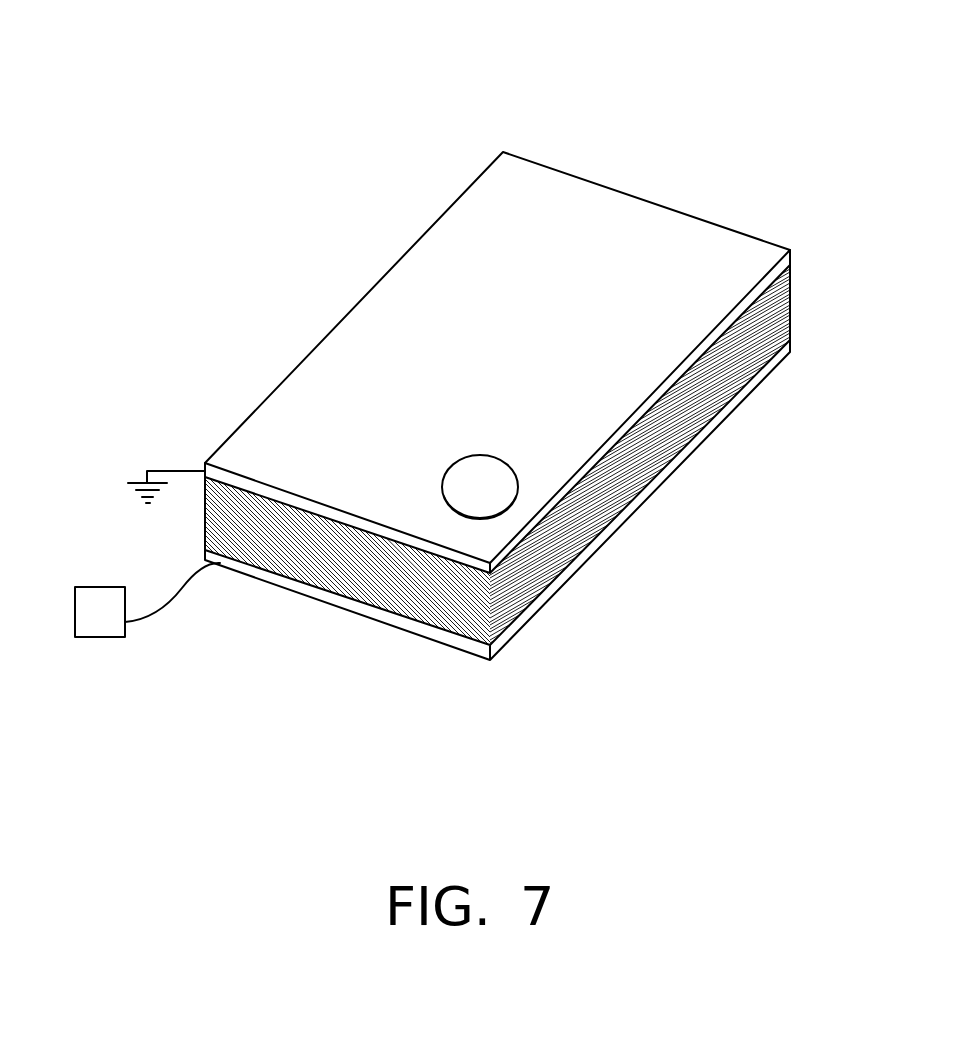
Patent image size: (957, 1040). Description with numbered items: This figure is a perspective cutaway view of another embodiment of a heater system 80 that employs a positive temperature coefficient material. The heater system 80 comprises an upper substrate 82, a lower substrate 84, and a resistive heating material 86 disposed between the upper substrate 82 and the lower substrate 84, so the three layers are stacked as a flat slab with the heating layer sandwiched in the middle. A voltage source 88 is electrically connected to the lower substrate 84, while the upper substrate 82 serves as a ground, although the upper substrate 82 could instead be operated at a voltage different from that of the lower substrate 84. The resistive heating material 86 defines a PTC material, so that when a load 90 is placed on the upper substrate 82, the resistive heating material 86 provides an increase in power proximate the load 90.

The heater system 80 is at (643, 108).
The upper substrate 82 is at (727, 252).
The lower substrate 84 is at (763, 368).
The resistive heating material 86 is at (777, 313).
The voltage source 88 is at (105, 587).
The load 90 is at (493, 500).